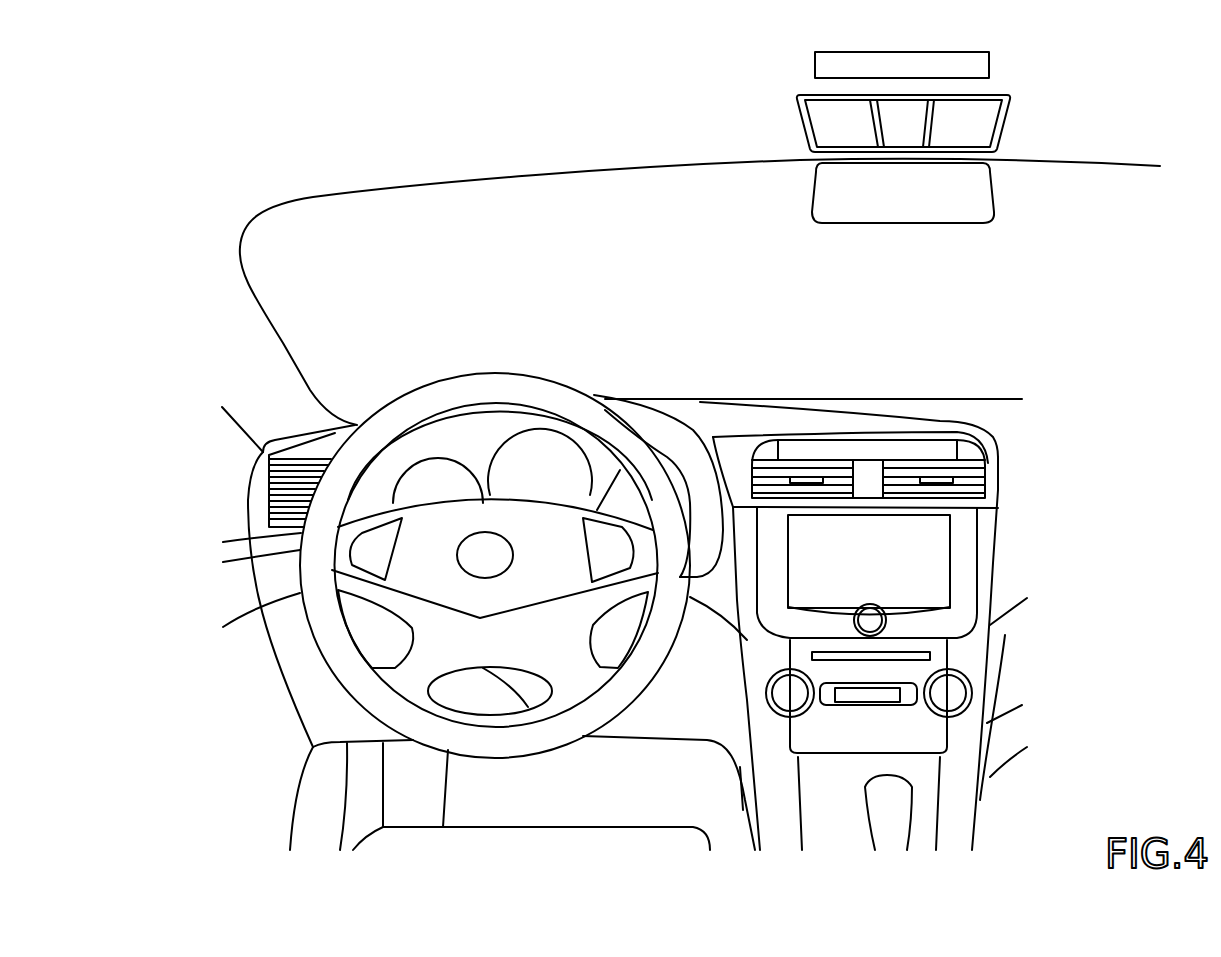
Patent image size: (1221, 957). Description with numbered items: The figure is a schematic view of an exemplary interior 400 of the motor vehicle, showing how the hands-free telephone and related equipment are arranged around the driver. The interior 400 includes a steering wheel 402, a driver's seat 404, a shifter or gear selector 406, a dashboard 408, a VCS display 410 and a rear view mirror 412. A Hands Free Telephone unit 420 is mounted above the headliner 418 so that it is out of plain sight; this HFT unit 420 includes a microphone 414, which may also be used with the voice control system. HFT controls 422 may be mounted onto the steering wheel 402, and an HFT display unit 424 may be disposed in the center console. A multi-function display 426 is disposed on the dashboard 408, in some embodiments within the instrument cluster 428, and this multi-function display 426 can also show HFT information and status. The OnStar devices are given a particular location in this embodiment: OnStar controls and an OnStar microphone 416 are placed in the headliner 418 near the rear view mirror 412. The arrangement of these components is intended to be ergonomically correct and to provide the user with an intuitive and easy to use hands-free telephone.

The interior 400 is at (213, 225).
The steering wheel 402 is at (448, 389).
The driver's seat 404 is at (605, 787).
The shifter or gear selector 406 is at (883, 815).
The dashboard 408 is at (668, 430).
The VCS display 410 is at (982, 521).
The rear view mirror 412 is at (960, 226).
The microphone 414 is at (813, 120).
The OnStar microphone 416 is at (1000, 127).
The headliner 418 is at (535, 122).
The Hands Free Telephone (HFT) unit 420 is at (815, 63).
The HFT controls 422 is at (388, 620).
The HFT display unit 424 is at (920, 447).
The multi-function display 426 is at (617, 503).
The instrument cluster 428 is at (488, 427).